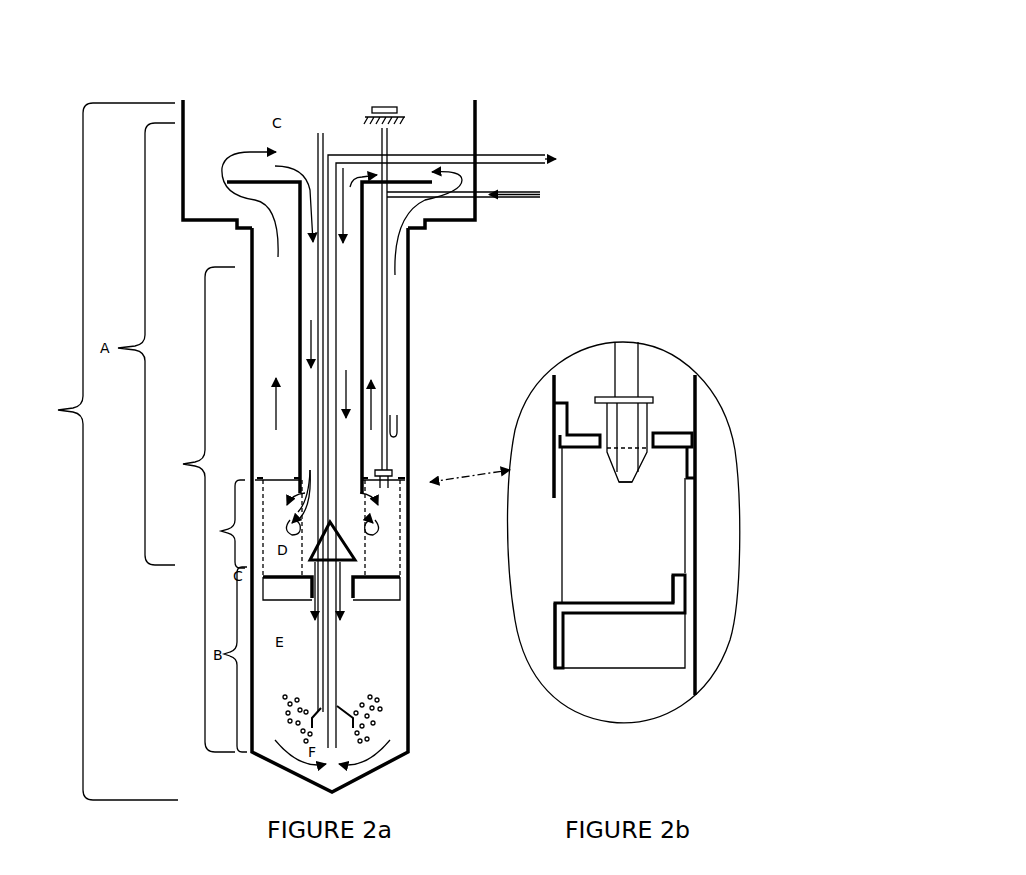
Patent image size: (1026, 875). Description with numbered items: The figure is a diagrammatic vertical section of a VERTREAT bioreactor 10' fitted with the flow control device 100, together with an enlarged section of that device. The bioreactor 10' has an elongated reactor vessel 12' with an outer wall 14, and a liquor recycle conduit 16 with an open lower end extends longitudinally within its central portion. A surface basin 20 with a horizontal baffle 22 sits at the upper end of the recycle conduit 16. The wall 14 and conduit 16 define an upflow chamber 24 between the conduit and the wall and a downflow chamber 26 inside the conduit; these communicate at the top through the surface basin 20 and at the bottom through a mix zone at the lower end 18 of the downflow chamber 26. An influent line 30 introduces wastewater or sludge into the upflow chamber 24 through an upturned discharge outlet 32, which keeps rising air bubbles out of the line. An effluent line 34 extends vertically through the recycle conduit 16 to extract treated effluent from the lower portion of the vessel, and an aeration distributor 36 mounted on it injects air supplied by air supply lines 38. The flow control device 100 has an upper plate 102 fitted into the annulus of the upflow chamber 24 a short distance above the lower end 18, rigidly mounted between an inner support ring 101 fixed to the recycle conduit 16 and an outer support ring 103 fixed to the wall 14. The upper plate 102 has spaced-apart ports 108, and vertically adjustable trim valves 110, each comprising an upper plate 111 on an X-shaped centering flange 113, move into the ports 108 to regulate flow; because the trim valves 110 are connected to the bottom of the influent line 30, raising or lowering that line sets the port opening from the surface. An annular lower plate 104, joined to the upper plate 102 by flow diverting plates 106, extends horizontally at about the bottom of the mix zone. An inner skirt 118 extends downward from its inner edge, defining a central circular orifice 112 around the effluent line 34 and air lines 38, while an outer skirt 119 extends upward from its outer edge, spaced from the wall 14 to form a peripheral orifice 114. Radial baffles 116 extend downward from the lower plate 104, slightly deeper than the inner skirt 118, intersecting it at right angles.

In FIG. 2a, the bioreactor 10' is at (103, 451).
In FIG. 2a, the reactor vessel 12' is at (194, 509).
In FIG. 2a, the outer wall 14 is at (410, 655).
In FIG. 2a, the liquor recycle conduit 16 is at (362, 360).
In FIG. 2b, the liquor recycle conduit 16 is at (555, 495).
In FIG. 2a, the lower end of downflow chamber 18 is at (345, 520).
In FIG. 2a, the surface basin 20 is at (185, 127).
In FIG. 2a, the horizontal baffle 22 is at (400, 183).
In FIG. 2a, the upflow chamber 24 is at (372, 405).
In FIG. 2a, the downflow chamber 26 is at (347, 393).
In FIG. 2a, the influent line 30 is at (490, 199).
In FIG. 2b, the influent line 30 is at (627, 352).
In FIG. 2a, the upturned discharge outlet 32 is at (397, 420).
In FIG. 2a, the effluent line 34 is at (335, 342).
In FIG. 2a, the aeration distributor 36 is at (353, 718).
In FIG. 2a, the air supply line 38 is at (324, 133).
In FIG. 2a, the flow control device 100 is at (219, 524).
In FIG. 2b, the inner support ring 101 is at (580, 400).
In FIG. 2b, the upper plate 102 is at (598, 437).
In FIG. 2b, the outer support ring 103 is at (697, 463).
In FIG. 2b, the annular lower plate 104 is at (687, 613).
In FIG. 2b, the flow diverting plates 106 is at (663, 545).
In FIG. 2b, the ports 108 is at (652, 440).
In FIG. 2b, the trim valve 110 is at (652, 425).
In FIG. 2b, the upper plate of trim valve 111 is at (645, 412).
In FIG. 2a, the central circular orifice 112 is at (312, 578).
In FIG. 2b, the centering flange 113 is at (606, 484).
In FIG. 2a, the peripheral orifice 114 is at (405, 573).
In FIG. 2b, the peripheral orifice 114 is at (690, 605).
In FIG. 2a, the radial baffles 116 is at (388, 593).
In FIG. 2b, the radial baffles 116 is at (667, 648).
In FIG. 2b, the inner skirt 118 is at (565, 648).
In FIG. 2b, the outer skirt 119 is at (686, 595).